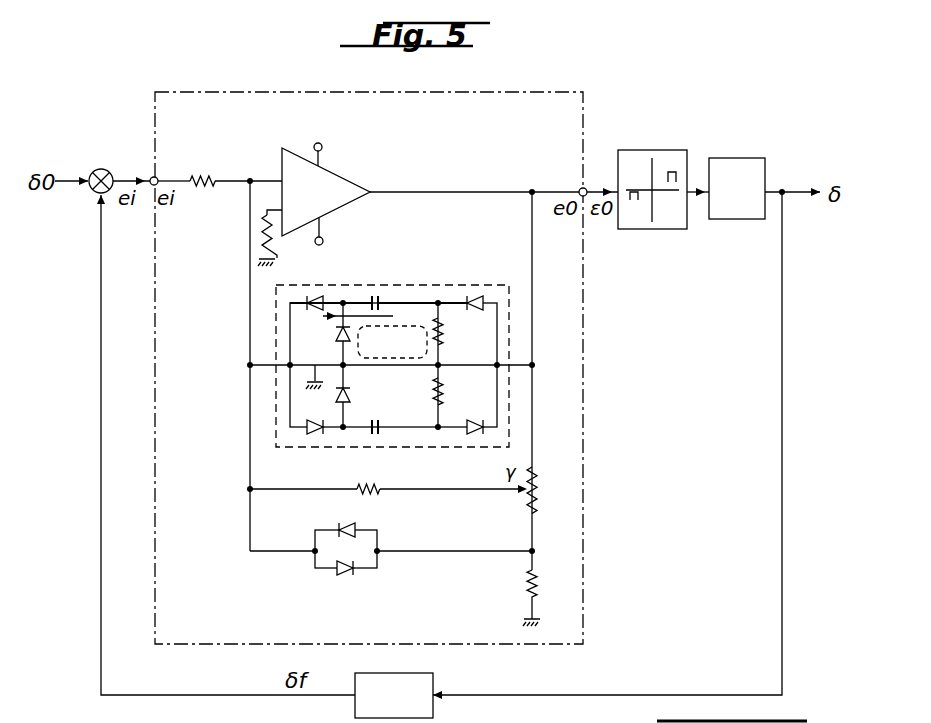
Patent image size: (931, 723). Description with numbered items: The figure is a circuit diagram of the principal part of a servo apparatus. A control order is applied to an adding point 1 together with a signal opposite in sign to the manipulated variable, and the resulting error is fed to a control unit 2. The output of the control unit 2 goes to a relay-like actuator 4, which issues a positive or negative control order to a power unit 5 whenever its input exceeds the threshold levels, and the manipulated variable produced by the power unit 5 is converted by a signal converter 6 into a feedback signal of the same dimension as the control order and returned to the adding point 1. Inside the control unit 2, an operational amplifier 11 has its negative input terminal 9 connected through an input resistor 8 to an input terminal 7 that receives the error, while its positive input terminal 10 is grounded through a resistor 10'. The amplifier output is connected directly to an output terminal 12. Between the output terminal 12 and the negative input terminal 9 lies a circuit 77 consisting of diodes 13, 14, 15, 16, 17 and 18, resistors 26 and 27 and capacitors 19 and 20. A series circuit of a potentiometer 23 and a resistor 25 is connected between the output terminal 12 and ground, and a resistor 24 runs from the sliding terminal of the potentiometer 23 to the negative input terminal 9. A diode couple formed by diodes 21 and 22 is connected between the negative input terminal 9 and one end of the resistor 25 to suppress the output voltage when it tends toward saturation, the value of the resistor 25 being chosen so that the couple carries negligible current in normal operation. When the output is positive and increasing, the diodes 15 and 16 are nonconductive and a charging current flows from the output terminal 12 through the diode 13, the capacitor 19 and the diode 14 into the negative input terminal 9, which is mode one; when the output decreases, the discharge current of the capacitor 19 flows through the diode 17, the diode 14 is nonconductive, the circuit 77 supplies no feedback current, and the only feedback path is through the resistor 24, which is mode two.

The adding point 1 is at (105, 167).
The control unit 2 is at (583, 455).
The relay-like actuator 4 is at (642, 230).
The power unit 5 is at (735, 220).
The signal converter 6 is at (433, 676).
The input terminal 7 is at (156, 179).
The input resistor 8 is at (200, 188).
The negative input terminal 9 is at (271, 175).
The positive input terminal 10 is at (247, 200).
The resistor 10' is at (289, 248).
The operational amplifier 11 is at (346, 177).
The output terminal 12 is at (583, 188).
The diode 13 is at (478, 296).
The diode 14 is at (324, 296).
The diode 15 is at (474, 406).
The diode 16 is at (314, 418).
The diode 17 is at (348, 344).
The diode 18 is at (360, 400).
The capacitor 19 is at (377, 294).
The capacitor 20 is at (378, 418).
The diode 21 is at (344, 522).
The diode 22 is at (345, 575).
The potentiometer 23 is at (537, 500).
The resistor 24 is at (372, 494).
The resistor 25 is at (527, 584).
The resistor 26 is at (444, 335).
The resistor 27 is at (444, 390).
The circuit 77 is at (424, 282).